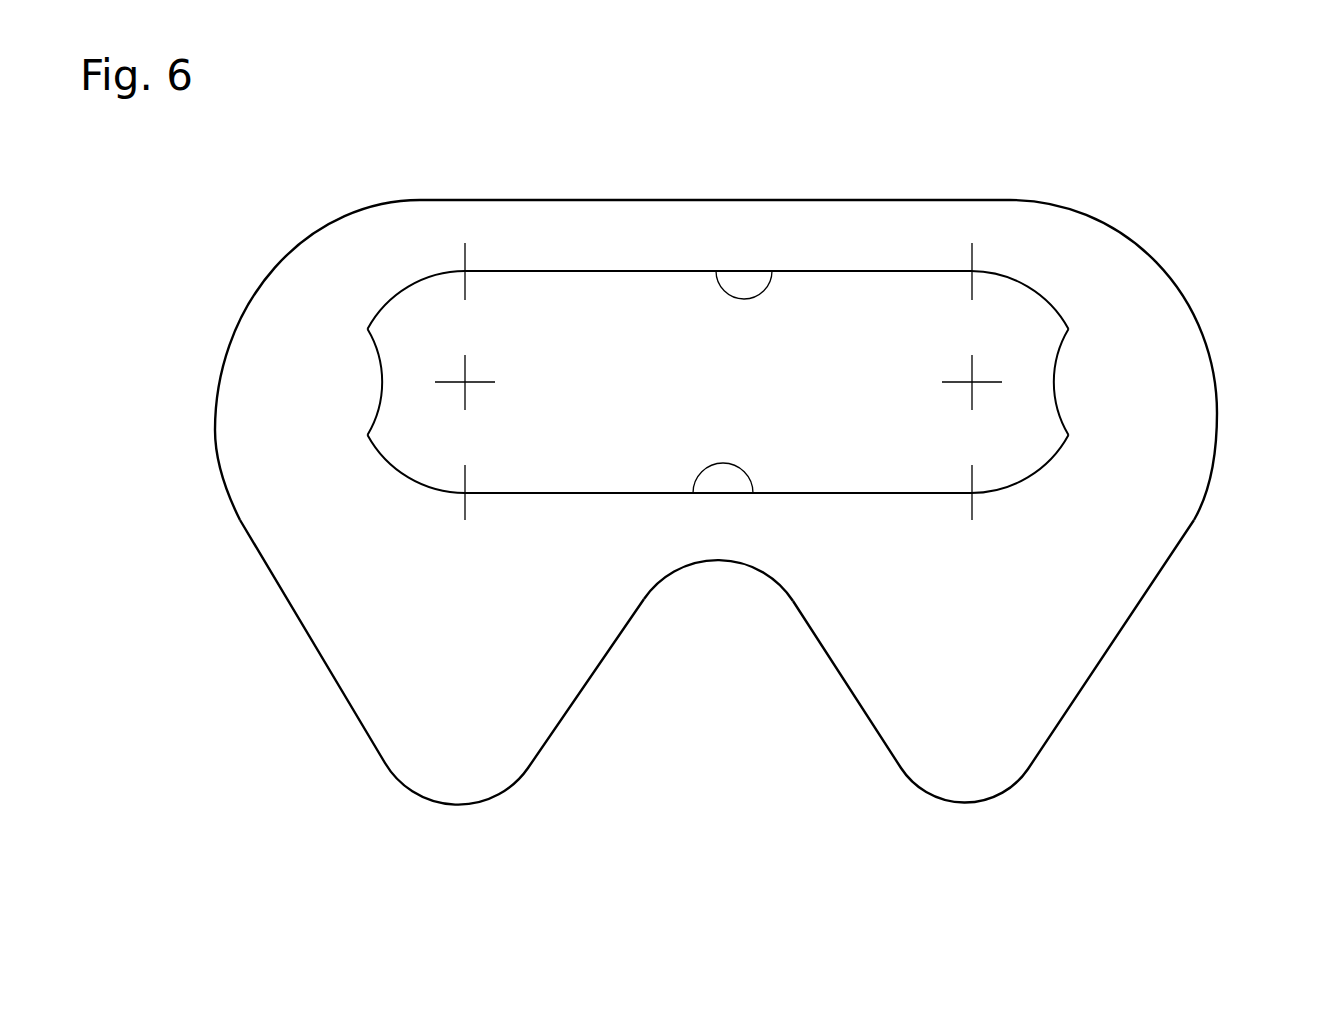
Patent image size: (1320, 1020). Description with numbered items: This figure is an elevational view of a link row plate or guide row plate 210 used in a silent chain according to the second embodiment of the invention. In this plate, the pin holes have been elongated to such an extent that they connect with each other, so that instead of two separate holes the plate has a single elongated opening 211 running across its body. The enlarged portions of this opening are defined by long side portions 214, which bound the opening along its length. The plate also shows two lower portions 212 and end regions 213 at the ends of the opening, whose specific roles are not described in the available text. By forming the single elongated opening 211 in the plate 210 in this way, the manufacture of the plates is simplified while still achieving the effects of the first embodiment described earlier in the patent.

The link row plate 210 is at (977, 173).
The elongated opening 211 is at (1058, 447).
The leg portion 212 is at (465, 757).
The notch / recess of opening 213 is at (382, 372).
The long side portion 214 is at (716, 271).